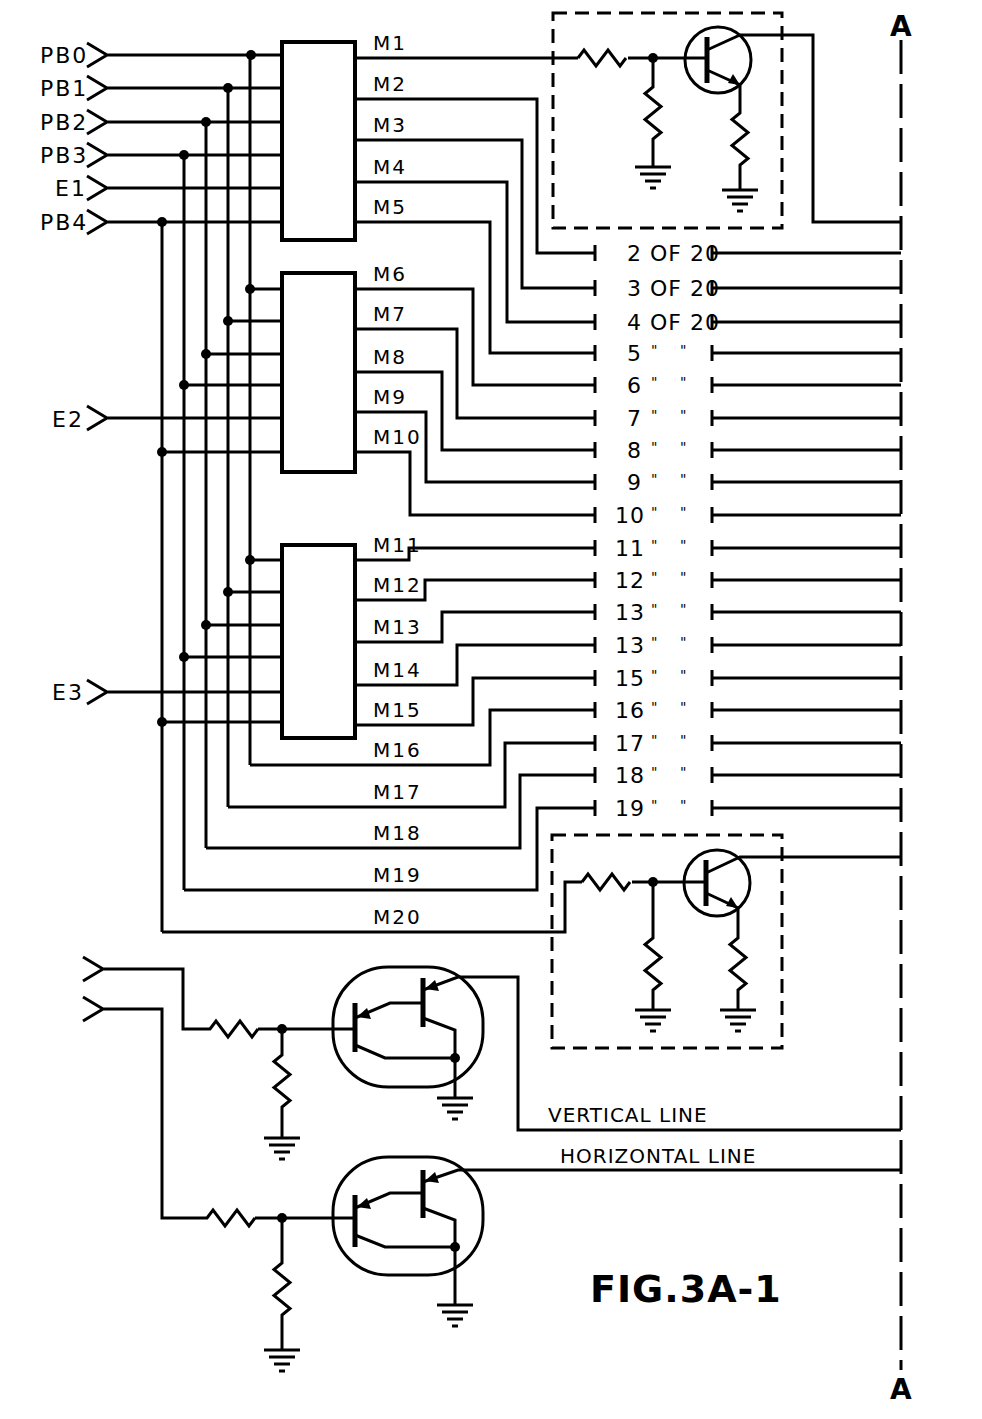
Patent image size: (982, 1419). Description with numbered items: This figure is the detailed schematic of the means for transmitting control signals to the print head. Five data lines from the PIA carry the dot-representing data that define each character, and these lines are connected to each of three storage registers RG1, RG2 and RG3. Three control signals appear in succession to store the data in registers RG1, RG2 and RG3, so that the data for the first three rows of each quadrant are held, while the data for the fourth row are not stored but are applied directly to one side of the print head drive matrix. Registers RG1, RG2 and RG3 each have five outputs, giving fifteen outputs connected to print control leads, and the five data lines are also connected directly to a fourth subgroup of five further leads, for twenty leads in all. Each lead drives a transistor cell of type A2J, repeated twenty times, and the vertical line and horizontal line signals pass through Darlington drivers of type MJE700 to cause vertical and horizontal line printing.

The register RG1 is at (318, 141).
The register RG2 is at (318, 372).
The register RG3 is at (318, 641).
The driver transistor cell A2J is at (698, 93).
The Darlington power transistor MJE700 is at (343, 987).